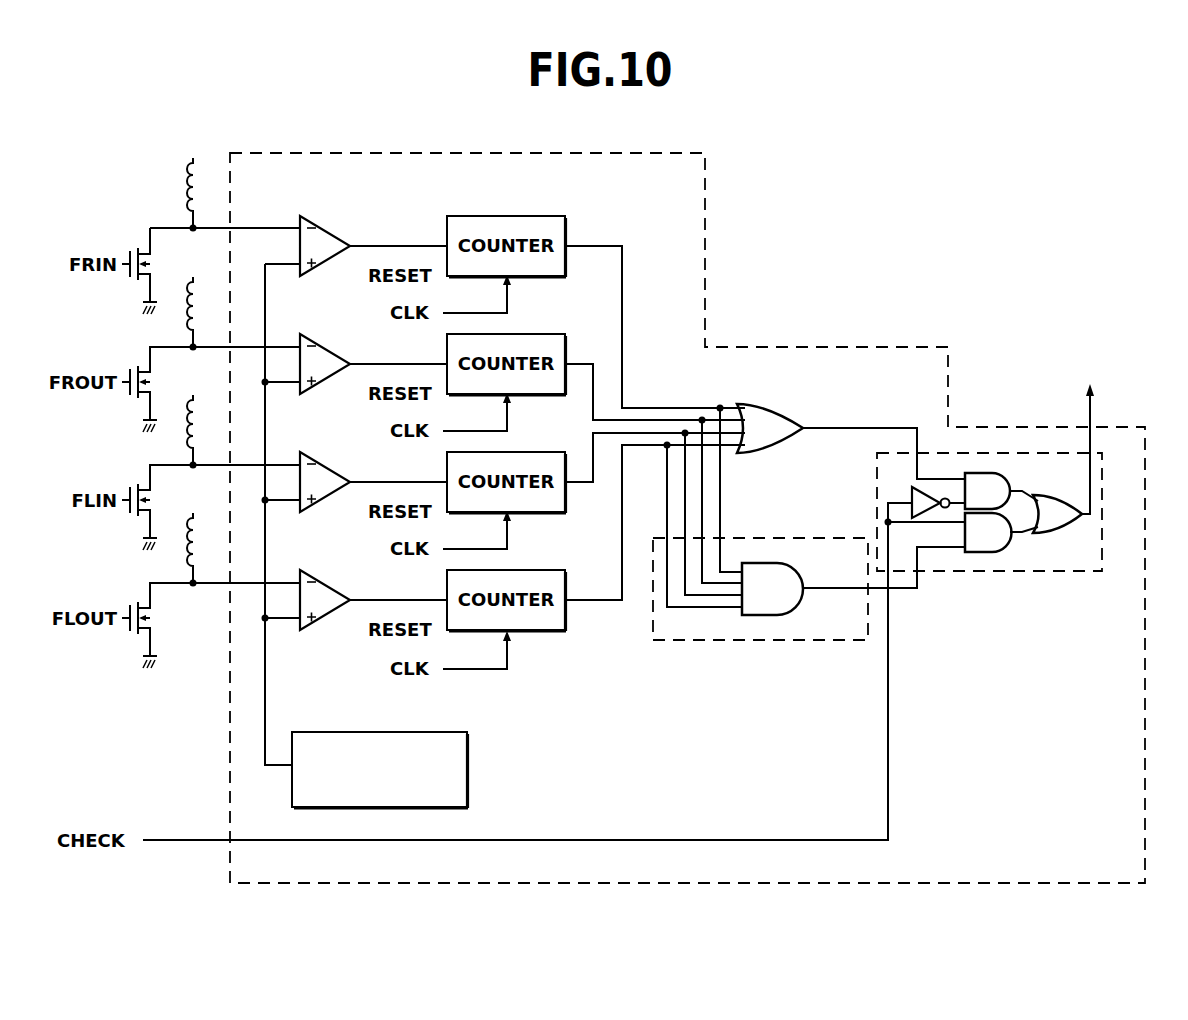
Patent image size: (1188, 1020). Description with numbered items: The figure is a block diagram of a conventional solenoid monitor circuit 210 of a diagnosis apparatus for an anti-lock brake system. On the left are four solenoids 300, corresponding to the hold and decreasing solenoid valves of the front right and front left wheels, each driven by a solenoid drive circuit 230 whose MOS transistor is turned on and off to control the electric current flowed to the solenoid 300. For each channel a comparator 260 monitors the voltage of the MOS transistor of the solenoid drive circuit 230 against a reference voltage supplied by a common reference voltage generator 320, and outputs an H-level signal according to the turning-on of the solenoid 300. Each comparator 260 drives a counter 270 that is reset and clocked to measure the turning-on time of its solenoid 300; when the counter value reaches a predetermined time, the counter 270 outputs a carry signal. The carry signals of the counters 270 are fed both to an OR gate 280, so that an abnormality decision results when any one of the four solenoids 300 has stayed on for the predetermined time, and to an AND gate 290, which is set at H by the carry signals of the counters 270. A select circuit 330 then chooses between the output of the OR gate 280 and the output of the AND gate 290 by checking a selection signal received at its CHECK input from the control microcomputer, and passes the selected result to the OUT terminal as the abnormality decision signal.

The solenoid monitor circuit 210 is at (737, 355).
The solenoid drive circuit 230 is at (128, 244).
The comparator 260 is at (322, 232).
The counter 270 is at (512, 224).
The OR gate 280 is at (780, 410).
The AND gate 290 is at (792, 641).
The solenoid 300 is at (186, 184).
The reference voltage generator 320 is at (457, 755).
The select circuit 330 is at (1018, 572).